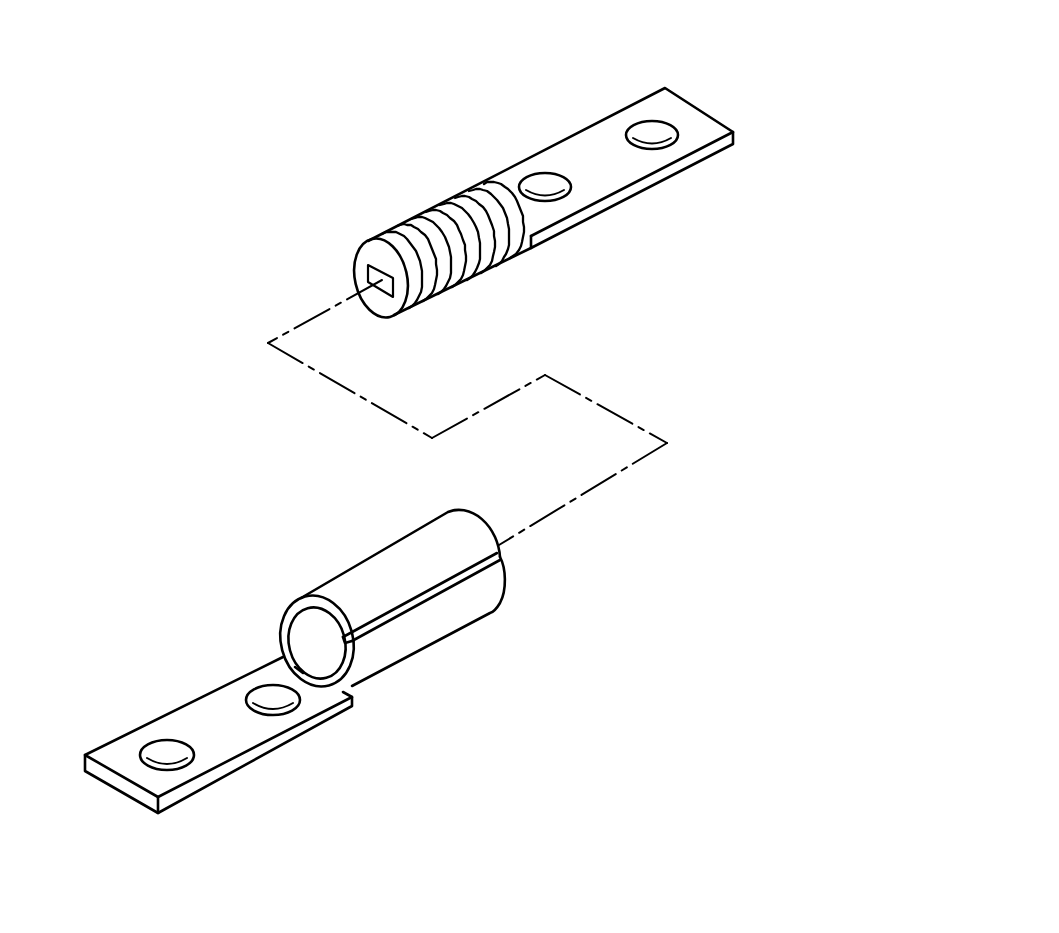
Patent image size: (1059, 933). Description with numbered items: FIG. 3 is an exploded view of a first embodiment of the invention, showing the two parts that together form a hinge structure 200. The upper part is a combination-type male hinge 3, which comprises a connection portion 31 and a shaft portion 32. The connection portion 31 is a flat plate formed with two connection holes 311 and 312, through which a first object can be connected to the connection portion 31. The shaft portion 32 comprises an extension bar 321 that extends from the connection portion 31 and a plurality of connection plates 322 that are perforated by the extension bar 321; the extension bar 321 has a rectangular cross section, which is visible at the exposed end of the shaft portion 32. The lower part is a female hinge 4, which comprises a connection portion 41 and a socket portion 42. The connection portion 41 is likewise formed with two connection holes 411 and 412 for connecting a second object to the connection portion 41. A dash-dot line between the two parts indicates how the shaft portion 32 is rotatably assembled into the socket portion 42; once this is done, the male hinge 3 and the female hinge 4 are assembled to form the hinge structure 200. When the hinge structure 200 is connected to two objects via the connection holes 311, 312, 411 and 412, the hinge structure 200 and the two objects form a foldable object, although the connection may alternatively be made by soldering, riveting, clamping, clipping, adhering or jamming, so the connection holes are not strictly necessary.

The hinge structure 200 is at (253, 87).
The male hinge 3 is at (782, 74).
The connection portion 31 is at (598, 187).
The connection hole 311 is at (553, 197).
The connection hole 312 is at (658, 147).
The shaft portion 32 is at (273, 187).
The extension bar 321 is at (368, 275).
The connection plates 322 is at (403, 230).
The female hinge 4 is at (168, 585).
The connection portion 41 is at (182, 711).
The connection hole 411 is at (170, 765).
The connection hole 412 is at (275, 710).
The socket portion 42 is at (403, 643).